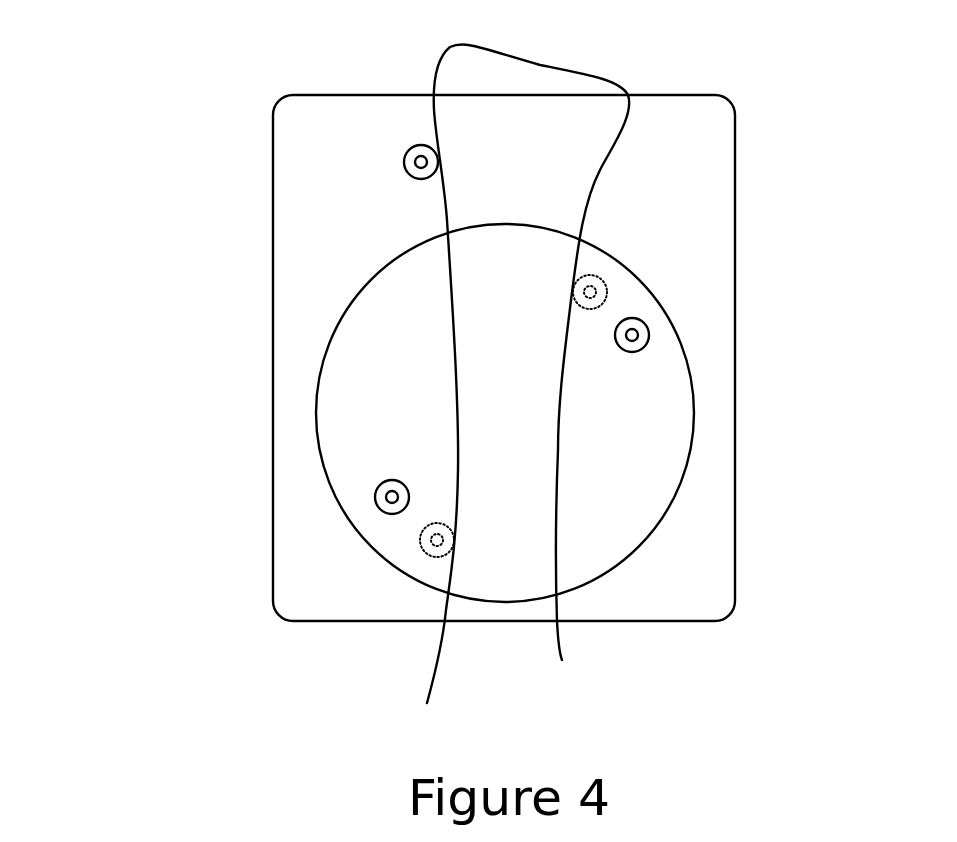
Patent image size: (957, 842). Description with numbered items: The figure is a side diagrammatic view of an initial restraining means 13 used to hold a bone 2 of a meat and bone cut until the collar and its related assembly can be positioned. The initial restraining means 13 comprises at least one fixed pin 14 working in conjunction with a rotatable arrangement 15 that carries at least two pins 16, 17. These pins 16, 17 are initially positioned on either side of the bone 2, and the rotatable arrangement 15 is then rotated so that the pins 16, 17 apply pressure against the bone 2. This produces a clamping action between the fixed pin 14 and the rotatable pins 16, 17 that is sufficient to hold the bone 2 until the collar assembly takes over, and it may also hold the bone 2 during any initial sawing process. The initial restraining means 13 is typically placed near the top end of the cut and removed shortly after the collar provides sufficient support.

The bone 2 is at (585, 83).
The initial restraining means 13 is at (212, 208).
The fixed pin 14 is at (407, 153).
The rotatable arrangement 15 is at (682, 467).
The pin 16 is at (650, 334).
The pin 17 is at (376, 503).